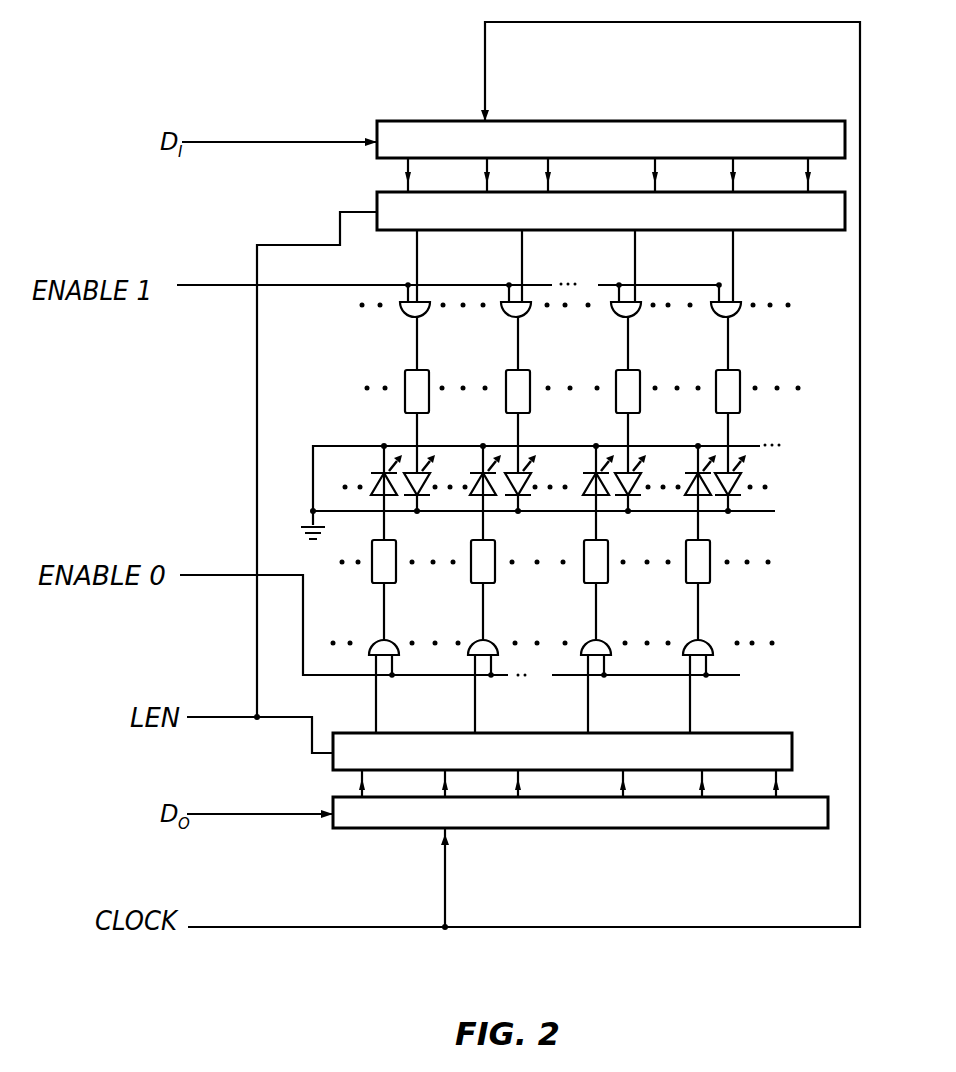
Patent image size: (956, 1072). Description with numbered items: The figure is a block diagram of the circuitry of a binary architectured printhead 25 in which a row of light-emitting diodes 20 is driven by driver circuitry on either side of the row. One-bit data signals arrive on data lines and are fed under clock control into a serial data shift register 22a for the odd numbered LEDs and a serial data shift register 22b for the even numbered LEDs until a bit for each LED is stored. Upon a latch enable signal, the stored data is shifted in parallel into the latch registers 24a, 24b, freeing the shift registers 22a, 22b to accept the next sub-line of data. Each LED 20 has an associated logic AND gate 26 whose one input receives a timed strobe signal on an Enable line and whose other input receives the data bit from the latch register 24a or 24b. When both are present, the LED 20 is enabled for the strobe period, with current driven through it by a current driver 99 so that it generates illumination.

The light-emitting diode 20 is at (375, 481).
The serial data shift register 22a is at (372, 830).
The serial data shift register 22b is at (377, 121).
The latch register 24a is at (333, 770).
The latch register 24b is at (377, 195).
The printhead 25 is at (248, 348).
The logic AND gate 26 is at (405, 318).
The current driver circuitry 99 is at (506, 398).